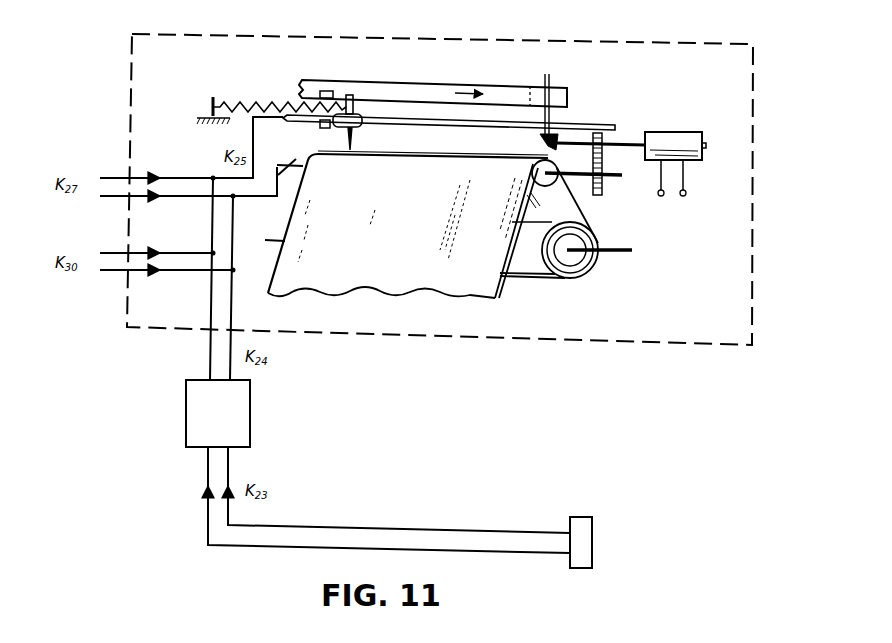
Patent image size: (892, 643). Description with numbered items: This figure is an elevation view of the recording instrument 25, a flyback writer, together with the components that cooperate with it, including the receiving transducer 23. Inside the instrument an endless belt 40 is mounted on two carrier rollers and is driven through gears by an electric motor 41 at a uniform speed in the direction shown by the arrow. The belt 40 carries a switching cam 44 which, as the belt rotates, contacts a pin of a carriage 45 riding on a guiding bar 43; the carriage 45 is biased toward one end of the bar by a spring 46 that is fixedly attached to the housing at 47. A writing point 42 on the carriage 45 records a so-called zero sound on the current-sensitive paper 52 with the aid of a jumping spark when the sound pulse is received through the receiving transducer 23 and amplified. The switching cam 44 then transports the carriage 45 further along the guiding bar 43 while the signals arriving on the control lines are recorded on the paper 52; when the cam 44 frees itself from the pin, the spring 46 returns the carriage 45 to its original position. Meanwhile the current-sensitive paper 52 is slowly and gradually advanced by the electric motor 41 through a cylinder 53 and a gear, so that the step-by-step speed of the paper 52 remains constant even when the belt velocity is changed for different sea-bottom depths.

The receiving transducer 23 is at (594, 545).
The recording instrument 25 is at (613, 328).
The endless belt 40 is at (430, 92).
The electric motor 41 is at (667, 132).
The writing point 42 is at (354, 138).
The guiding bar 43 is at (486, 128).
The switching cam 44 is at (324, 91).
The carriage 45 is at (351, 100).
The spring 46 is at (248, 102).
The housing attachment point 47 is at (217, 94).
The current-sensitive paper 52 is at (383, 287).
The cylinder 53 is at (548, 160).